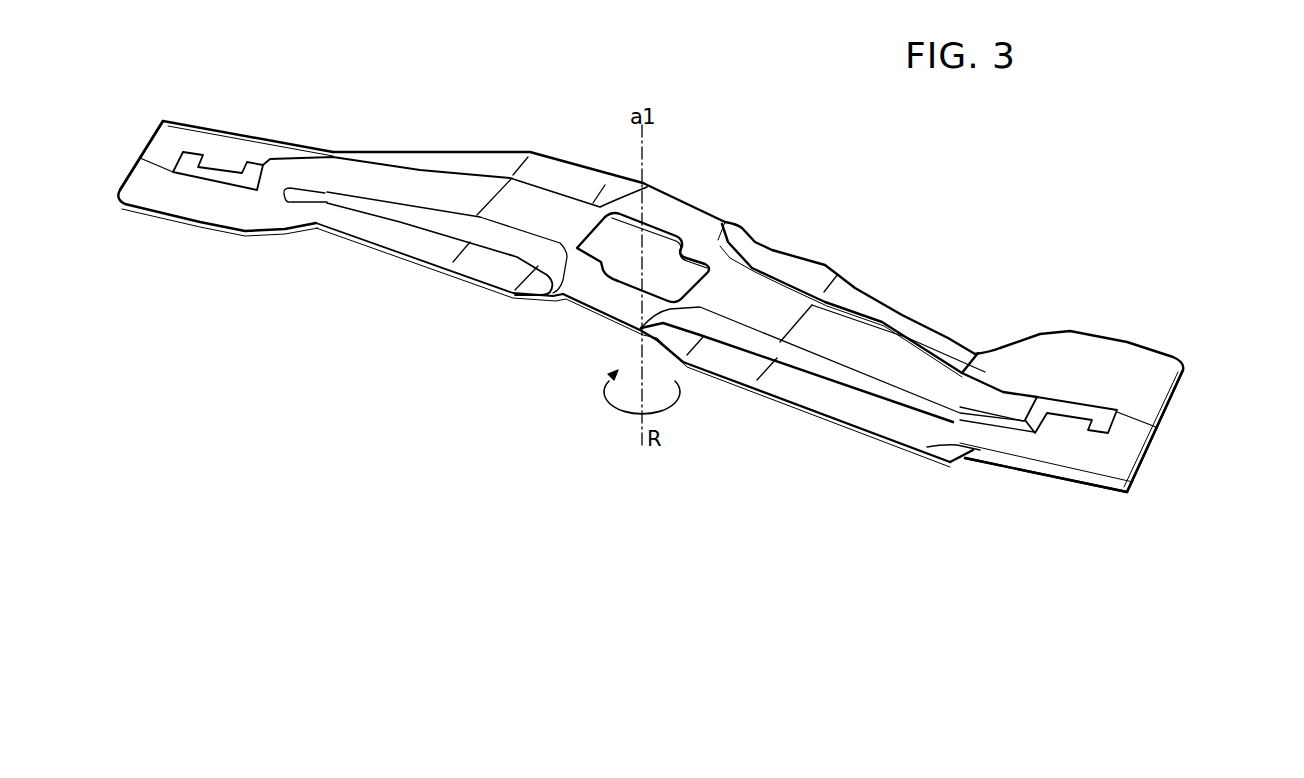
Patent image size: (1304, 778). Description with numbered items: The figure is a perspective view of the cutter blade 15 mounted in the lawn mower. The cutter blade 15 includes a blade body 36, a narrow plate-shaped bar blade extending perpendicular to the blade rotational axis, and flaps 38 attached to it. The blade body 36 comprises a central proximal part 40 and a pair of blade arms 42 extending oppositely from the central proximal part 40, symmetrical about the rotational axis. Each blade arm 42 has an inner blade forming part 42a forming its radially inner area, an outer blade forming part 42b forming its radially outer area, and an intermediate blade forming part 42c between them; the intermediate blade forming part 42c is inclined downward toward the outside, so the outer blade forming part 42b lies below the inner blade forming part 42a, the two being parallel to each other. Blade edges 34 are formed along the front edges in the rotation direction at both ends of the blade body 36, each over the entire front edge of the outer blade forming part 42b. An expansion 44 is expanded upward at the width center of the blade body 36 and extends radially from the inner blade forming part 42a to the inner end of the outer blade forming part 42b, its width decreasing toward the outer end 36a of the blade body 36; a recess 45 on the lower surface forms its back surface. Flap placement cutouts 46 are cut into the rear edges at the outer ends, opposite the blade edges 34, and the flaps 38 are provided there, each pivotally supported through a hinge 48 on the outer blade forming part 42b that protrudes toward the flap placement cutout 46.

The cutter blade 15 is at (855, 100).
The blade edge 34 is at (1070, 473).
The blade body 36 is at (828, 258).
The outer end of the blade body 36a is at (150, 138).
The flap 38 is at (184, 236).
The central proximal part 40 is at (693, 217).
The blade arm 42 is at (455, 150).
The inner blade forming part 42a is at (727, 360).
The outer blade forming part 42b is at (1037, 443).
The intermediate blade forming part 42c is at (855, 408).
The expansion 44 is at (390, 185).
The recess 45 is at (420, 200).
The flap placement cutout 46 is at (272, 197).
The hinge 48 is at (216, 170).